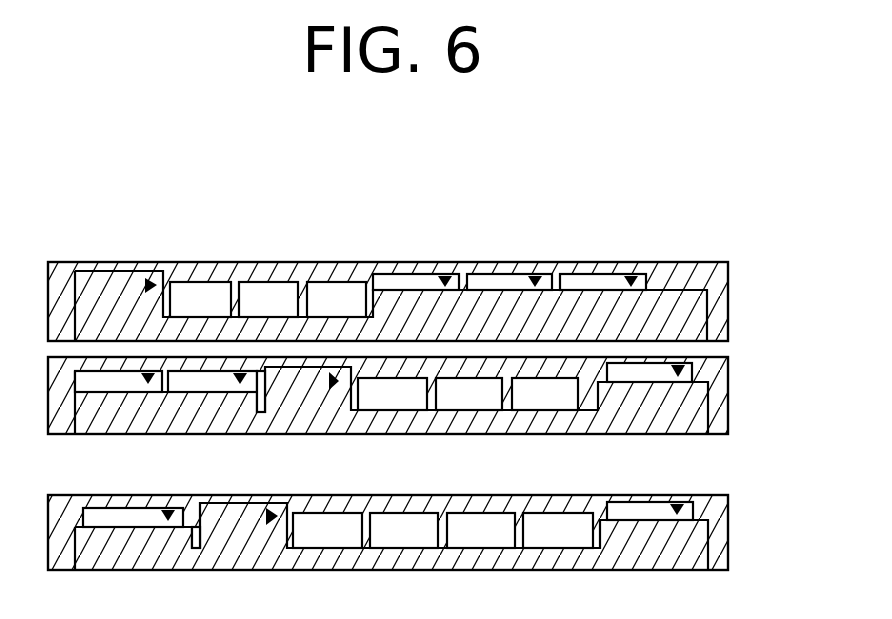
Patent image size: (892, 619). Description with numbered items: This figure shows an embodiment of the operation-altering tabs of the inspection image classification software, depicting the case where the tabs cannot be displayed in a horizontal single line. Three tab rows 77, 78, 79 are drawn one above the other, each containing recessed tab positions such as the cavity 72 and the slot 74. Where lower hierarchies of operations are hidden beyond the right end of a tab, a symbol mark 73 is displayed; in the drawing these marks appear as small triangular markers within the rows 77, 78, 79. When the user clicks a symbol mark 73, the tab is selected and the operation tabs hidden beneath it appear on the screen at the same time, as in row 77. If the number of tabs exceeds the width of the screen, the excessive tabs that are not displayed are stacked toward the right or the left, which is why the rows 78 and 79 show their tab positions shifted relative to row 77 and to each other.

The cavity 72 is at (337, 296).
The symbol mark 73 is at (150, 278).
The slot 74 is at (110, 516).
The operation tabs 77 is at (728, 300).
The second layer 78 is at (728, 395).
The third layer 79 is at (728, 530).